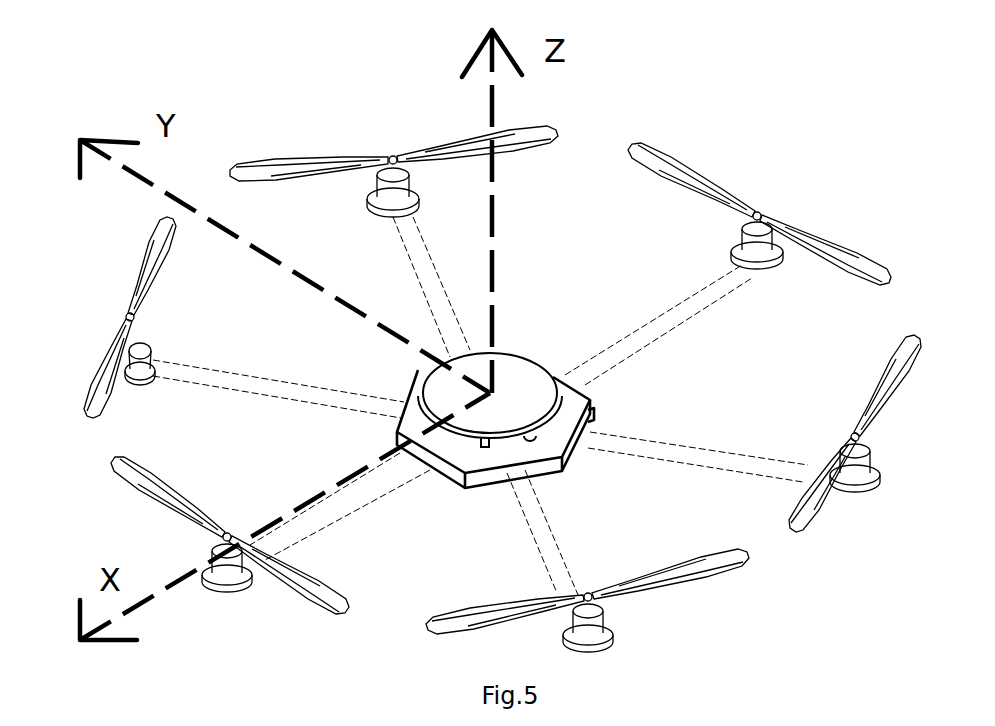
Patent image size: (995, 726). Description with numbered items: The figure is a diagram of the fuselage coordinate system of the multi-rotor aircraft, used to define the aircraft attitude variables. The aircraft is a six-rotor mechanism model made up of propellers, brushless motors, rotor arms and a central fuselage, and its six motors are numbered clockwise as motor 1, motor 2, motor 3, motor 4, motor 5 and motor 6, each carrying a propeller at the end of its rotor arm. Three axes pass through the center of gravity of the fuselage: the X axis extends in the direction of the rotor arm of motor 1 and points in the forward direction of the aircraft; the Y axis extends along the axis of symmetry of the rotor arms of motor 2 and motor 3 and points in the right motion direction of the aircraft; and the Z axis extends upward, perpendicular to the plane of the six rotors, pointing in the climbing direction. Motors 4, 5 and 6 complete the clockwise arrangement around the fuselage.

The No. 1 motor 1 is at (230, 535).
The No. 2 motor 2 is at (143, 317).
The No. 3 motor 3 is at (394, 156).
The No. 4 motor 4 is at (759, 214).
The No. 5 motor 5 is at (855, 433).
The No. 6 motor 6 is at (587, 600).